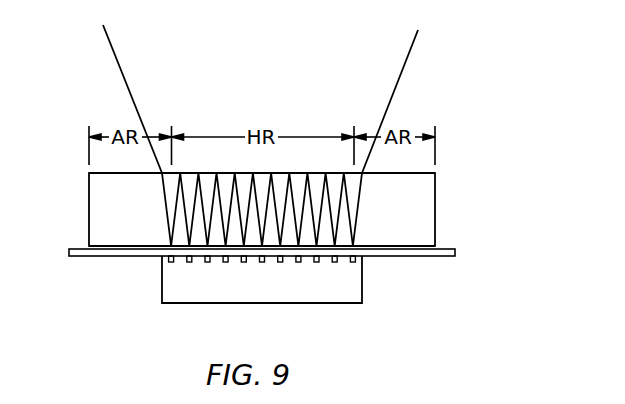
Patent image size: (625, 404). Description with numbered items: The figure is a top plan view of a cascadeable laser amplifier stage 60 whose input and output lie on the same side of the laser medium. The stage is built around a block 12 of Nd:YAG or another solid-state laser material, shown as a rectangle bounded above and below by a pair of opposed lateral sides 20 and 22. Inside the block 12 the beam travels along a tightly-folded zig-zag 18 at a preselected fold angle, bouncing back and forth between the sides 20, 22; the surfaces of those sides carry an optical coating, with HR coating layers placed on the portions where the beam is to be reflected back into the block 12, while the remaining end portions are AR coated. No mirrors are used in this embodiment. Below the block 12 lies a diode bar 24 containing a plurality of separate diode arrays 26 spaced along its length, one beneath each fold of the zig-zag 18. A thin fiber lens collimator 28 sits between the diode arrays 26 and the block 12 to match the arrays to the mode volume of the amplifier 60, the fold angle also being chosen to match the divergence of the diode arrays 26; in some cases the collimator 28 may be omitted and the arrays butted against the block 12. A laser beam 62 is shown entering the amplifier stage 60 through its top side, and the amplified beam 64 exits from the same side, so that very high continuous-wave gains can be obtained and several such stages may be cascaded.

The block 12 is at (99, 206).
The zig-zag 18 is at (168, 233).
The lateral side 20 is at (417, 174).
The lateral side 22 is at (428, 245).
The diode bar 24 is at (332, 295).
The diode arrays 26 is at (172, 262).
The fiber lens collimator 28 is at (452, 244).
The cascadeable laser amplifier stage 60 is at (92, 304).
The laser beam 62 is at (112, 50).
The amplified beam 64 is at (408, 53).